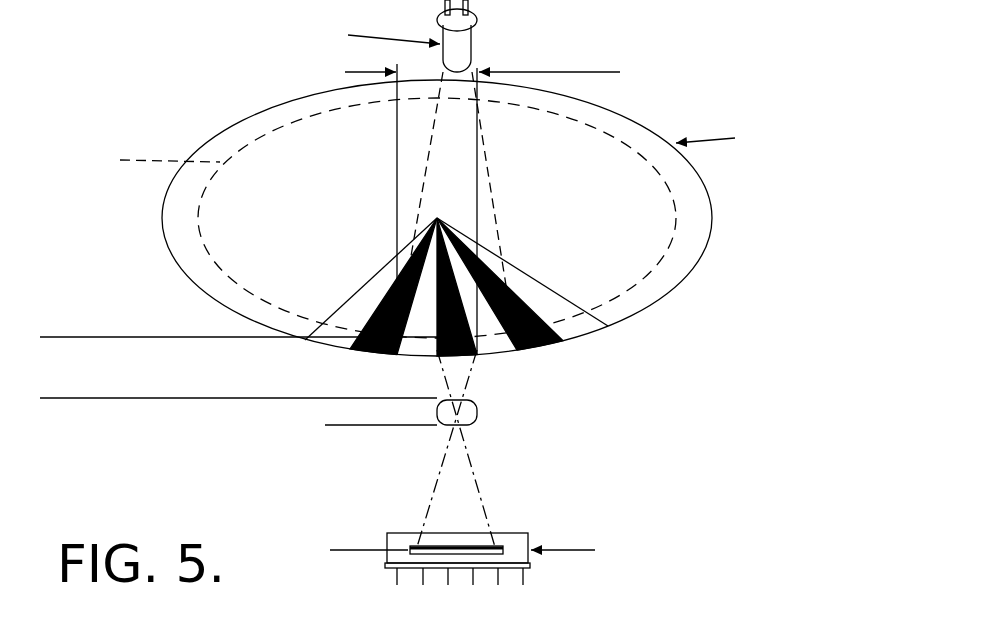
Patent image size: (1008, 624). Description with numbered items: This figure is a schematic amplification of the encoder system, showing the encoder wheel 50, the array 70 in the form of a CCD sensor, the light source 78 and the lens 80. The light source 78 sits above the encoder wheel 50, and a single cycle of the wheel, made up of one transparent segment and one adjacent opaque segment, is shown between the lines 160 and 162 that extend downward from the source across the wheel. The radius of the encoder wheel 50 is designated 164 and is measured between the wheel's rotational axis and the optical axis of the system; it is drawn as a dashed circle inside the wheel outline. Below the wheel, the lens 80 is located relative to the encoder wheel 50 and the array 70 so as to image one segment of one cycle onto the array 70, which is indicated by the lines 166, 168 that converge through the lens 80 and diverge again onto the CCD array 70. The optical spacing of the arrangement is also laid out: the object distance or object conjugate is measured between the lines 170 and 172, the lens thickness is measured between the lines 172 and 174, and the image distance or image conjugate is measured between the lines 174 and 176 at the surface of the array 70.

The encoder wheel 50 is at (255, 112).
The light source 78 is at (471, 42).
The array 70 is at (518, 533).
The lens 80 is at (472, 425).
The line 160 is at (396, 140).
The line 162 is at (478, 140).
The radius of encoder wheel 164 is at (200, 240).
The line 166 is at (435, 372).
The line 168 is at (479, 372).
The line 170 is at (50, 336).
The line 172 is at (51, 400).
The line 174 is at (345, 427).
The line 176 is at (345, 549).